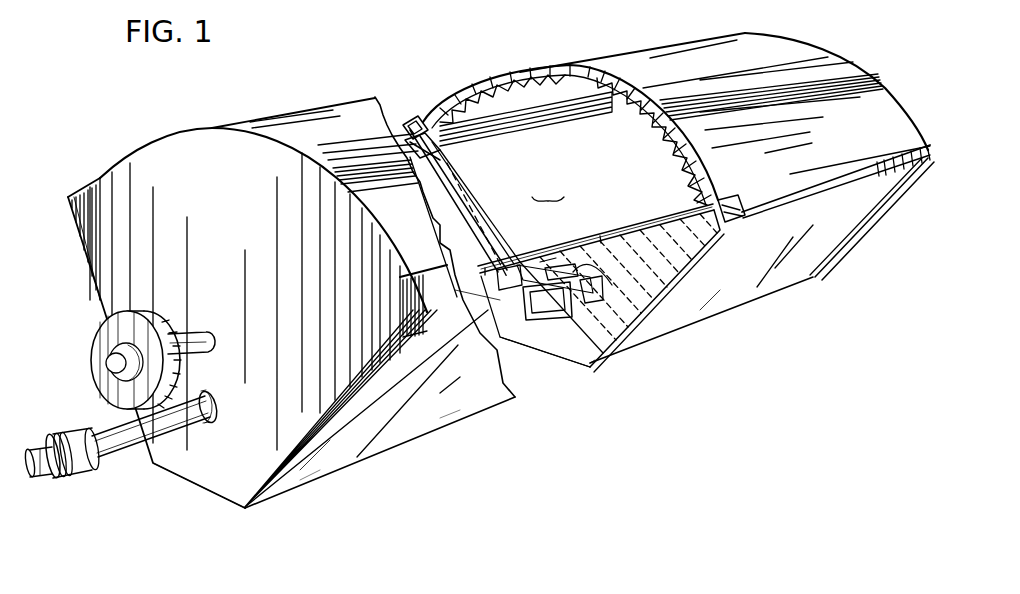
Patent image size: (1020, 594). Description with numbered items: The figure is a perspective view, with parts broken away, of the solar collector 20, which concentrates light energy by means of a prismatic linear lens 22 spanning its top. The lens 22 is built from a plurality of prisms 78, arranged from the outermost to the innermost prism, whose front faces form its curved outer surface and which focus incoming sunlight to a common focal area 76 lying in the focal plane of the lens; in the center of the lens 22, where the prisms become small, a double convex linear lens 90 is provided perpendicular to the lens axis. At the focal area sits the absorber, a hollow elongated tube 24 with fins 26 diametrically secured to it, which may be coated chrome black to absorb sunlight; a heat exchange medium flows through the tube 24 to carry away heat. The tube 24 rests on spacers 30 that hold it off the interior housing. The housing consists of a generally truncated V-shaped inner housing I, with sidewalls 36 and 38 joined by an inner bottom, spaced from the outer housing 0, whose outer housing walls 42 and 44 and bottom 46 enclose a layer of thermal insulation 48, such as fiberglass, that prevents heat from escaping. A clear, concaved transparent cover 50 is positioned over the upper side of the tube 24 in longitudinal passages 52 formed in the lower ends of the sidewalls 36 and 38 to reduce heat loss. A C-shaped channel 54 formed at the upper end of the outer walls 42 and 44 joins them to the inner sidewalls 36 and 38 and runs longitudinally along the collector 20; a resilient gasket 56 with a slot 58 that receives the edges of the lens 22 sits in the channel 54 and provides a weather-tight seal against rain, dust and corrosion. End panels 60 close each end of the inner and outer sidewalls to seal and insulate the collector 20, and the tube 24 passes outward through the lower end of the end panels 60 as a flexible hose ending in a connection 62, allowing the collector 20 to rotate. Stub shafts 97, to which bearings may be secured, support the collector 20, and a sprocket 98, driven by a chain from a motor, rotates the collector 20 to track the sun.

The collector 20 is at (430, 478).
The prismatic linear lens 22 is at (292, 112).
The hollow elongated tube 24 is at (558, 278).
The fins 26 is at (512, 258).
The spacers 30 is at (553, 300).
The sidewall 36 is at (660, 230).
The sidewall 38 is at (547, 187).
The outer housing wall 42 is at (313, 468).
The outer housing wall 44 is at (433, 190).
The bottom 46 is at (226, 510).
The layer of thermal insulation 48 is at (688, 257).
The transparent cover 50 is at (562, 275).
The longitudinal passages 52 is at (490, 300).
The C-shaped channel 54 is at (410, 148).
The resilient gasket 56 is at (410, 128).
The slot 58 is at (425, 118).
The end panels 60 is at (103, 256).
The connection 62 is at (79, 432).
The common focal area 76 is at (547, 256).
The prisms 78 is at (457, 140).
The double convex linear lens 90 is at (555, 90).
The stub shafts 97 is at (184, 334).
The sprocket 98 is at (100, 334).
The outer housing 0 is at (452, 422).
The inner housing I is at (633, 236).